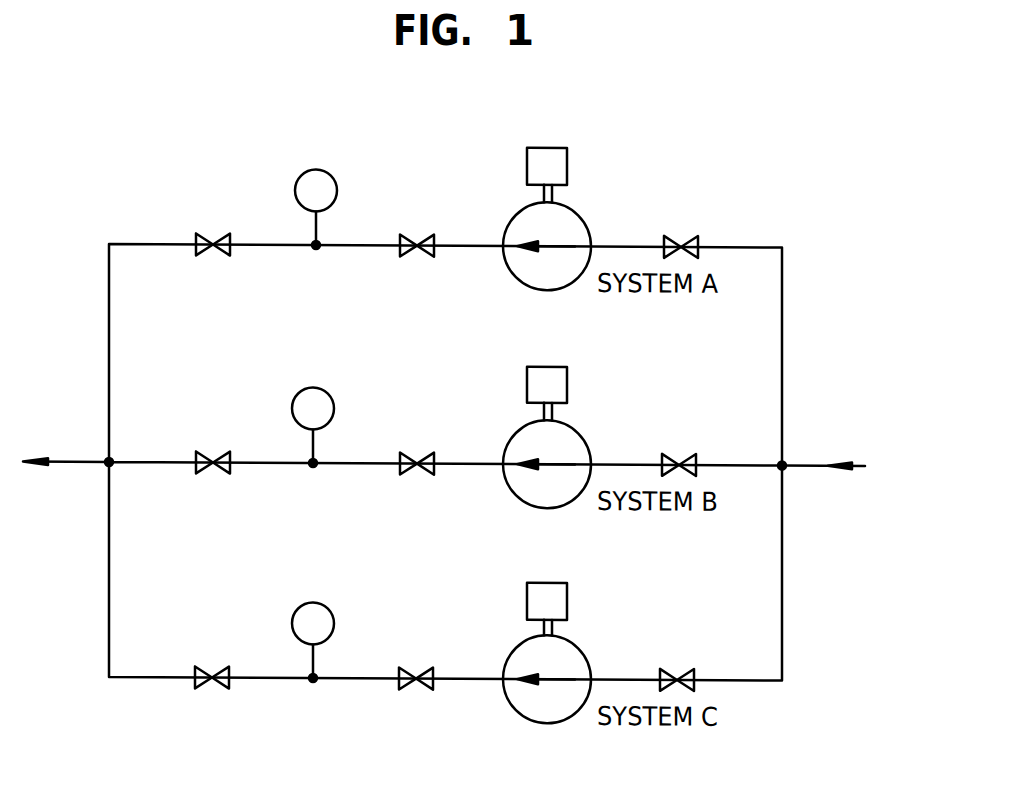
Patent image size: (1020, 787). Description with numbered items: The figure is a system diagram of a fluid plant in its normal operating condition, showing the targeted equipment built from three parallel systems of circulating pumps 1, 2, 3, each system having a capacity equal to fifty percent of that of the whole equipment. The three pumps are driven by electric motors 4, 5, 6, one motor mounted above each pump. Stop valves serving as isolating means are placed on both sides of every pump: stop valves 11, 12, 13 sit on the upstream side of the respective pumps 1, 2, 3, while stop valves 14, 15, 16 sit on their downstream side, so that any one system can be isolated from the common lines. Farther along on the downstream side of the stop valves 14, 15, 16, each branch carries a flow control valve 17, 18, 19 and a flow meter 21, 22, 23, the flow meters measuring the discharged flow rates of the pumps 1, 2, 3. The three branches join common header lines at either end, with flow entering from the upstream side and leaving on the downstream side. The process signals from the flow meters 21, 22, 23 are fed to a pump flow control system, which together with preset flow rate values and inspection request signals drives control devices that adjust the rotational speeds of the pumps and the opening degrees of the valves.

The circulating pump 1 is at (578, 211).
The circulating pump 2 is at (578, 429).
The circulating pump 3 is at (578, 644).
The electric motor 4 is at (527, 157).
The electric motor 5 is at (527, 376).
The electric motor 6 is at (527, 592).
The stop valve 11 is at (681, 232).
The stop valve 12 is at (679, 450).
The stop valve 13 is at (677, 665).
The stop valve 14 is at (417, 254).
The stop valve 15 is at (417, 472).
The stop valve 16 is at (416, 687).
The flow control valve 17 is at (213, 232).
The flow control valve 18 is at (213, 450).
The flow control valve 19 is at (212, 665).
The flow meter 21 is at (316, 168).
The flow meter 22 is at (313, 386).
The flow meter 23 is at (313, 601).